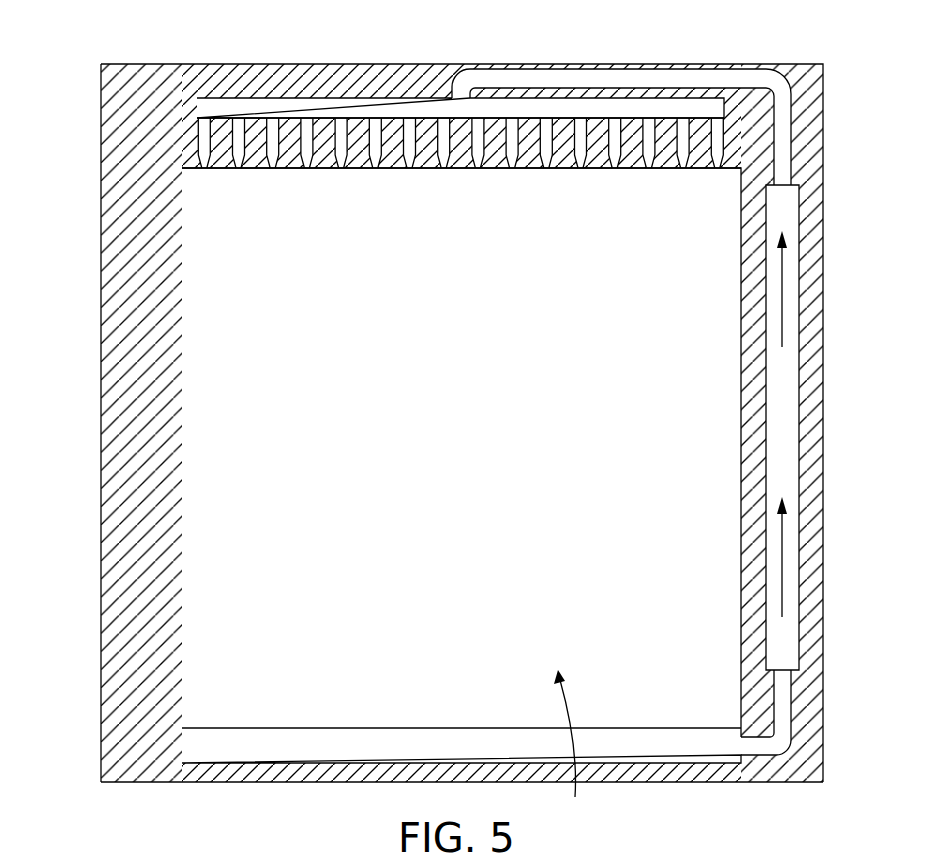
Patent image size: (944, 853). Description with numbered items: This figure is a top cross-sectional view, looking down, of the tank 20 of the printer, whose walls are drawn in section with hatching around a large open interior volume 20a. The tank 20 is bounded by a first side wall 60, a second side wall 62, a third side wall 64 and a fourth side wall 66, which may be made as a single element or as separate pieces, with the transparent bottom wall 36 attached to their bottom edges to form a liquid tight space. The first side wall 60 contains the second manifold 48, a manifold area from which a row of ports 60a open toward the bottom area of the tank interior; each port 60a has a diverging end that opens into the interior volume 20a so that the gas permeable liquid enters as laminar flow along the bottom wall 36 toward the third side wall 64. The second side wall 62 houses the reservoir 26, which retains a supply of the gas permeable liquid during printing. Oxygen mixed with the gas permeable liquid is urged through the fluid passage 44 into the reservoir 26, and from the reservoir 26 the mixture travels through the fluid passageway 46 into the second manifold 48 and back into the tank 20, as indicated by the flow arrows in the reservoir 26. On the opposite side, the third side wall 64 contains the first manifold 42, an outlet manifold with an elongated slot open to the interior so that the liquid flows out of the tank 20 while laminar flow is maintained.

The tank 20 is at (787, 34).
The interior volume 20a is at (576, 747).
The reservoir 26 is at (783, 418).
The bottom wall 36 is at (235, 546).
The first manifold 42 is at (340, 745).
The fluid passage 44 is at (780, 705).
The fluid passageway 46 is at (676, 80).
The second manifold 48 is at (598, 107).
The first side wall 60 is at (303, 80).
The ports 60a is at (238, 162).
The second side wall 62 is at (808, 277).
The third side wall 64 is at (257, 772).
The fourth side wall 66 is at (138, 436).